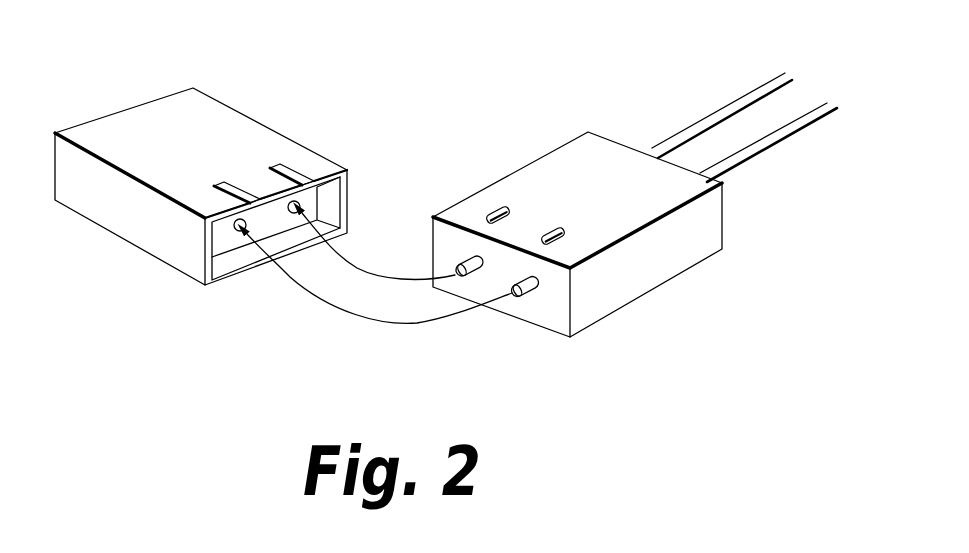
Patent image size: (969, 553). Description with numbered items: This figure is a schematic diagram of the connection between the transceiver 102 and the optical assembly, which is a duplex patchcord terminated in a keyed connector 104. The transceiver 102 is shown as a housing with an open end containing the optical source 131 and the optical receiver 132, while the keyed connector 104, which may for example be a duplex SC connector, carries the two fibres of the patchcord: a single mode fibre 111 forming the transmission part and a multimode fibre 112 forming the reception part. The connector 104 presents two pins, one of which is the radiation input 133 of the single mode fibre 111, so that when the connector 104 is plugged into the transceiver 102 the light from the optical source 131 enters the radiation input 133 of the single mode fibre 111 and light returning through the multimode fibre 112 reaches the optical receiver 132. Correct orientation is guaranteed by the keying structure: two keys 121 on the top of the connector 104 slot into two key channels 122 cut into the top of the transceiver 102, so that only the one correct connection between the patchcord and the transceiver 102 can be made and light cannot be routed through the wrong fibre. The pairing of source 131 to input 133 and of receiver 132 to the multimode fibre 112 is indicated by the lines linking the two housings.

The transceiver 102 is at (98, 198).
The keyed connector 104 is at (611, 322).
The single mode fibre 111 is at (783, 157).
The multimode fibre 112 is at (710, 97).
The keys 121 is at (550, 222).
The key channels 122 is at (275, 153).
The optical source 131 is at (232, 242).
The optical receiver 132 is at (300, 204).
The radiation input 133 is at (517, 307).